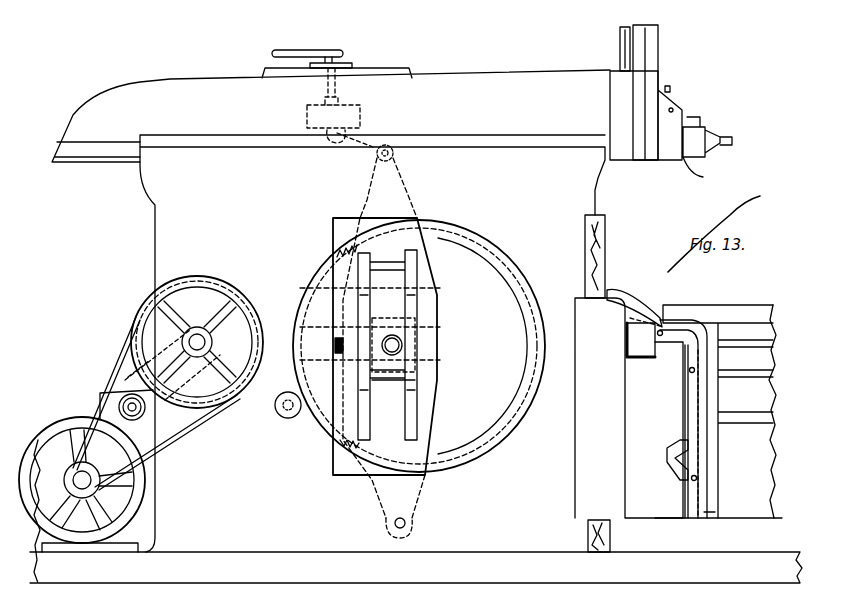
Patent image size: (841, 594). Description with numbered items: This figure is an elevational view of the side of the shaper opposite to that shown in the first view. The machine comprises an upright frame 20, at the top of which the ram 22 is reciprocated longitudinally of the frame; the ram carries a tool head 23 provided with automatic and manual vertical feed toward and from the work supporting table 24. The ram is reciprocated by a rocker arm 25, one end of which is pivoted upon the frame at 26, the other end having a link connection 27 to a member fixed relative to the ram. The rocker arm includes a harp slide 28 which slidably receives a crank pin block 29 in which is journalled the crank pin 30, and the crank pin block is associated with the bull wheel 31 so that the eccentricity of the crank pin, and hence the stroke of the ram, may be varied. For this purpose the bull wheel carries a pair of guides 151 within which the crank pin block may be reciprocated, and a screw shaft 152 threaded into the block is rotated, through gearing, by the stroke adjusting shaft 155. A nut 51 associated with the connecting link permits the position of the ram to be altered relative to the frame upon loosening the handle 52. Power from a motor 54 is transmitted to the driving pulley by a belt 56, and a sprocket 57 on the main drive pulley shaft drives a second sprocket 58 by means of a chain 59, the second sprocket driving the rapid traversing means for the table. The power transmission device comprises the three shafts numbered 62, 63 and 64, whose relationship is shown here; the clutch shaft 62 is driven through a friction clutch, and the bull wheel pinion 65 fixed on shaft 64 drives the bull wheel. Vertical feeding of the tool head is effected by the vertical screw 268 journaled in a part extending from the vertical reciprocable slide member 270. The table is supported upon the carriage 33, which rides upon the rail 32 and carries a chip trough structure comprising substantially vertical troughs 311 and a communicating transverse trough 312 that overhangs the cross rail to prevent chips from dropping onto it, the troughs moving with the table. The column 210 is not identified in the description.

The upright frame 20 is at (162, 232).
The ram 22 is at (168, 90).
The tool head 23 is at (652, 153).
The work supporting table 24 is at (760, 303).
The rocker arm 25 is at (419, 326).
The pivot 26 is at (408, 523).
The link connection 27 is at (370, 150).
The harp slide 28 is at (413, 302).
The crank pin block 29 is at (415, 325).
The crank pin 30 is at (395, 345).
The bull wheel 31 is at (352, 452).
The rail 32 is at (668, 352).
The carriage 33 is at (710, 512).
The nut 51 is at (307, 117).
The handle 52 is at (292, 50).
The motor 54 is at (48, 432).
The belt 56 is at (105, 388).
The sprocket 57 is at (218, 340).
The second sprocket 58 is at (128, 377).
The chain 59 is at (191, 342).
The clutch shaft 62 is at (199, 335).
The shaft 63 is at (151, 411).
The shaft 64 is at (280, 416).
The bull wheel pinion 65 is at (292, 418).
The guides 151 is at (440, 306).
The screw shaft 152 is at (336, 345).
The stroke adjusting shaft 155 is at (420, 357).
The column 210 is at (598, 248).
The vertical screw 268 is at (620, 47).
The vertical reciprocable slide member 270 is at (652, 55).
The vertical troughs 311 is at (706, 450).
The transverse trough 312 is at (645, 308).